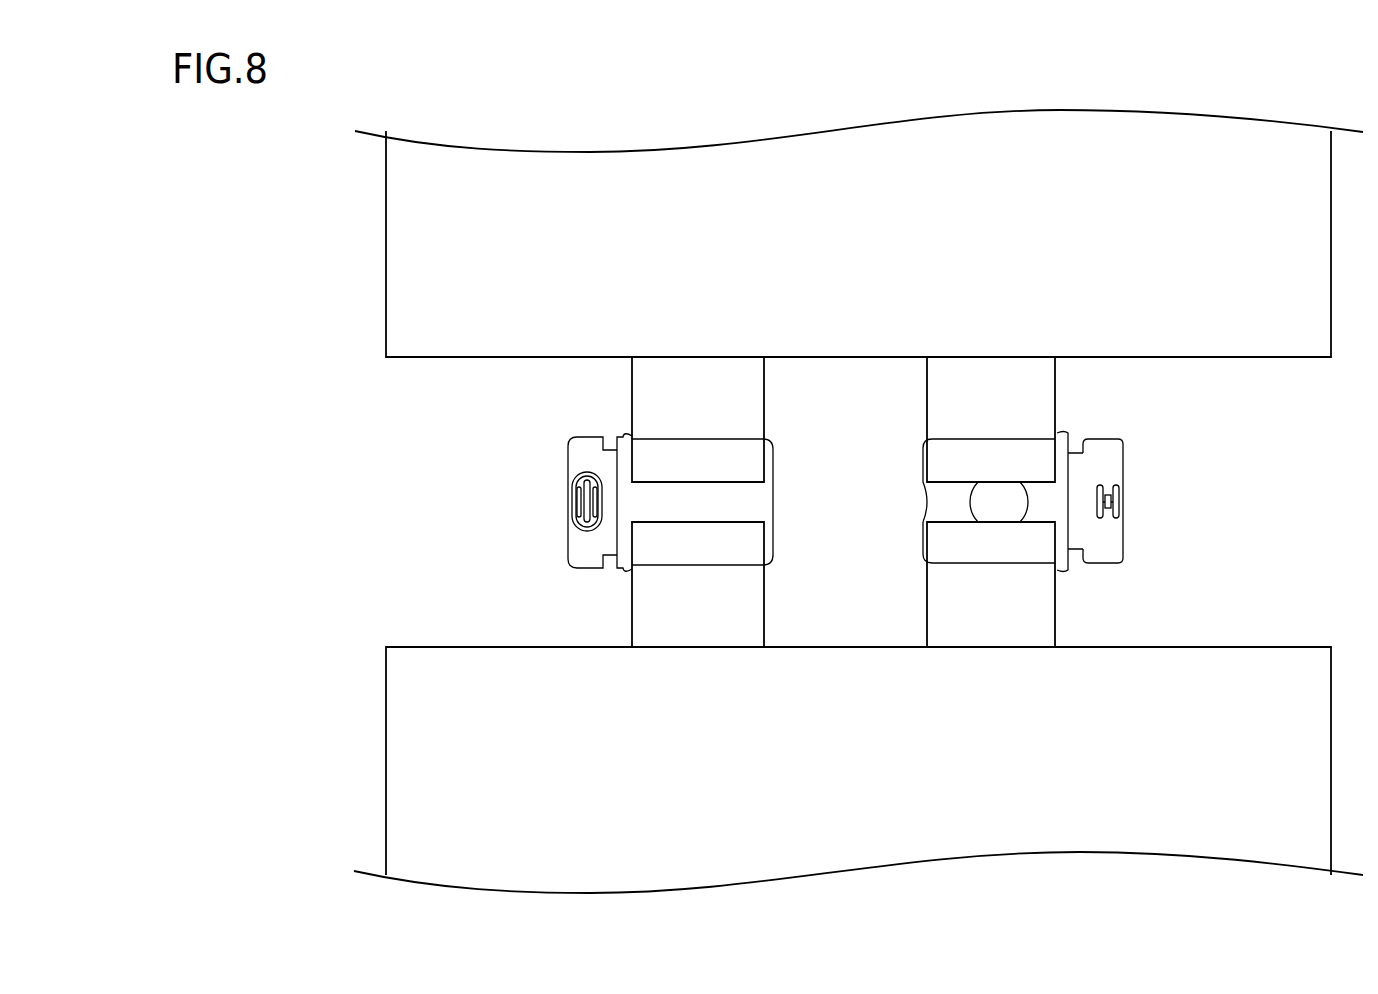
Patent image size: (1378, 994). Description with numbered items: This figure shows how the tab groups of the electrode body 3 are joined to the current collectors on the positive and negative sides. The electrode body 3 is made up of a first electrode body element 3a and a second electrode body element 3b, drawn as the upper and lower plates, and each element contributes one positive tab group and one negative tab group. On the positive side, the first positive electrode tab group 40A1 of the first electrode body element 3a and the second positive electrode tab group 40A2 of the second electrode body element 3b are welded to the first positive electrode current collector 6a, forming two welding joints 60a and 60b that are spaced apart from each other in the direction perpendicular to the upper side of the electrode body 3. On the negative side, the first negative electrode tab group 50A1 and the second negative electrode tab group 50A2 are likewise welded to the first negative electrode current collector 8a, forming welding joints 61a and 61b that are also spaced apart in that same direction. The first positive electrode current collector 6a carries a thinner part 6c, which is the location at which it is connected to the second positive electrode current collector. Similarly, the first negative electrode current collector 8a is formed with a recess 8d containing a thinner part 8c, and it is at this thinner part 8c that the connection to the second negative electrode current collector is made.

The electrode body 3 is at (858, 501).
The first electrode body element 3a is at (1212, 346).
The second electrode body element 3b is at (1212, 656).
The first negative electrode tab group 50A1 is at (698, 372).
The second negative electrode tab group 50A2 is at (698, 628).
The first positive electrode tab group 40A1 is at (987, 372).
The second positive electrode tab group 40A2 is at (988, 628).
The welding joint 61a is at (748, 463).
The welding joint 61b is at (748, 540).
The welding joint 60a is at (935, 456).
The welding joint 60b is at (935, 545).
The first negative electrode current collector 8a is at (626, 436).
The thinner part 8c is at (580, 527).
The recess 8d is at (577, 478).
The first positive electrode current collector 6a is at (1065, 432).
The thinner part 6c is at (1116, 486).